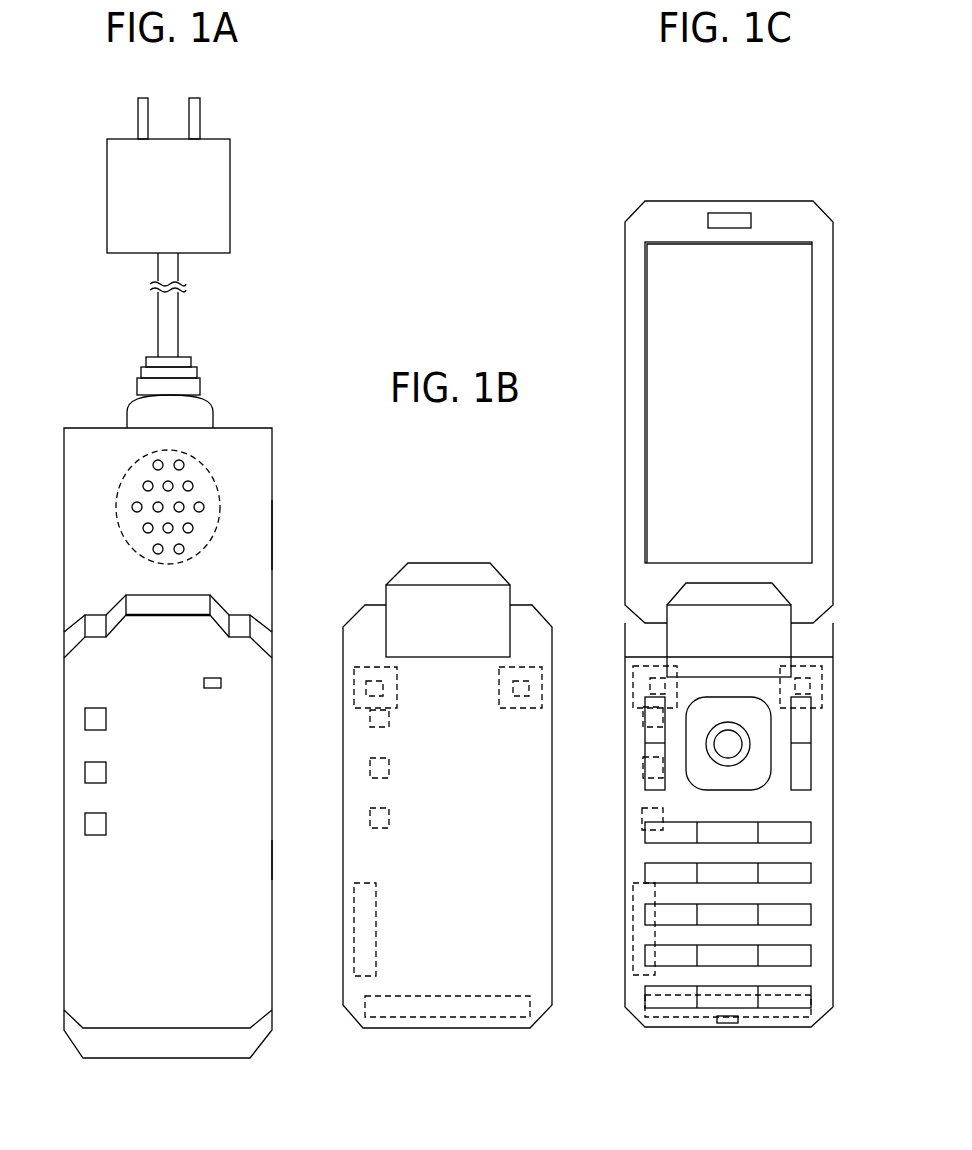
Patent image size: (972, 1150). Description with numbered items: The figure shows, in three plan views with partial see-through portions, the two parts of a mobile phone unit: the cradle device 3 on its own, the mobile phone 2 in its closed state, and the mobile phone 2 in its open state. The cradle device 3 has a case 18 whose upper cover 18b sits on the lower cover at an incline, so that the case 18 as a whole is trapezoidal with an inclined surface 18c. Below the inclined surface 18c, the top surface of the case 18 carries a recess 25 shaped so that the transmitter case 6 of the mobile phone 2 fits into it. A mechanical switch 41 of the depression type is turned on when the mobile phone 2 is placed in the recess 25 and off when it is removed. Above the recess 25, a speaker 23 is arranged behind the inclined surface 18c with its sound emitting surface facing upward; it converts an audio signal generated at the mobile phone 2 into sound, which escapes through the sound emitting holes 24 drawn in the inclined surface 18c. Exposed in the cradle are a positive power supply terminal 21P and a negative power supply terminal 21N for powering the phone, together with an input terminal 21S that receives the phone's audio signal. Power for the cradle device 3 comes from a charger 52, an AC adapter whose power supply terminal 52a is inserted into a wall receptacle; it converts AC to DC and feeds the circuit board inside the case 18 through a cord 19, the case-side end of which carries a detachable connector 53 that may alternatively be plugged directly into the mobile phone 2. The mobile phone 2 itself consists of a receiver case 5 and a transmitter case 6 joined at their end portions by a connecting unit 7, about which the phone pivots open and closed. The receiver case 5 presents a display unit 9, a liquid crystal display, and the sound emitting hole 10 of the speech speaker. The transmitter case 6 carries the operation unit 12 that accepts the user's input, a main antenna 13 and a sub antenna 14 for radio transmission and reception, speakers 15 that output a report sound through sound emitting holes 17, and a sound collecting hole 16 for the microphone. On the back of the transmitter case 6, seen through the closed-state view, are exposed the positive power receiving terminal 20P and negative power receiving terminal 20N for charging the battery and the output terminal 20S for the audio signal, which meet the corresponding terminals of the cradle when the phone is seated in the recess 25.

In FIG. 1A, the cradle device 3 is at (337, 107).
In FIG. 1A, the charger 52 is at (230, 197).
In FIG. 1A, the power supply terminal 52a is at (200, 112).
In FIG. 1A, the cord 19 is at (180, 313).
In FIG. 1A, the connector 53 is at (205, 403).
In FIG. 1A, the case 18 is at (272, 464).
In FIG. 1A, the upper cover 18b is at (262, 520).
In FIG. 1A, the inclined surface 18c is at (262, 552).
In FIG. 1A, the speaker 23 is at (117, 508).
In FIG. 1A, the speaker holes 24 is at (193, 482).
In FIG. 1A, the mechanical switch 41 is at (221, 683).
In FIG. 1A, the positive power supply terminal 21P is at (85, 716).
In FIG. 1A, the input terminal 21S is at (85, 771).
In FIG. 1A, the negative power supply terminal 21N is at (85, 822).
In FIG. 1A, the recess 25 is at (265, 857).
In FIG. 1B, the mobile phone 2 is at (450, 518).
In FIG. 1C, the mobile phone 2 is at (740, 148).
In FIG. 1B, the connecting unit 7 is at (504, 592).
In FIG. 1C, the connecting unit 7 is at (782, 637).
In FIG. 1B, the receiver case 5 is at (540, 860).
In FIG. 1C, the receiver case 5 is at (825, 382).
In FIG. 1B, the sound emitting holes 17 is at (528, 684).
In FIG. 1C, the sound emitting holes 17 is at (810, 685).
In FIG. 1B, the speakers 15 is at (542, 686).
In FIG. 1C, the speakers 15 is at (822, 690).
In FIG. 1B, the positive power receiving terminal 20P is at (370, 718).
In FIG. 1C, the positive power receiving terminal 20P is at (643, 718).
In FIG. 1B, the output terminal 20S is at (370, 769).
In FIG. 1C, the output terminal 20S is at (643, 769).
In FIG. 1B, the negative power receiving terminal 20N is at (370, 820).
In FIG. 1C, the negative power receiving terminal 20N is at (642, 820).
In FIG. 1B, the sub antenna 14 is at (352, 932).
In FIG. 1C, the sub antenna 14 is at (633, 932).
In FIG. 1B, the main antenna 13 is at (450, 1018).
In FIG. 1C, the main antenna 13 is at (782, 1018).
In FIG. 1C, the sound emitting hole 10 is at (733, 215).
In FIG. 1C, the display unit 9 is at (803, 311).
In FIG. 1C, the transmitter case 6 is at (830, 773).
In FIG. 1C, the operation unit 12 is at (826, 890).
In FIG. 1C, the sound collecting hole 16 is at (730, 1027).